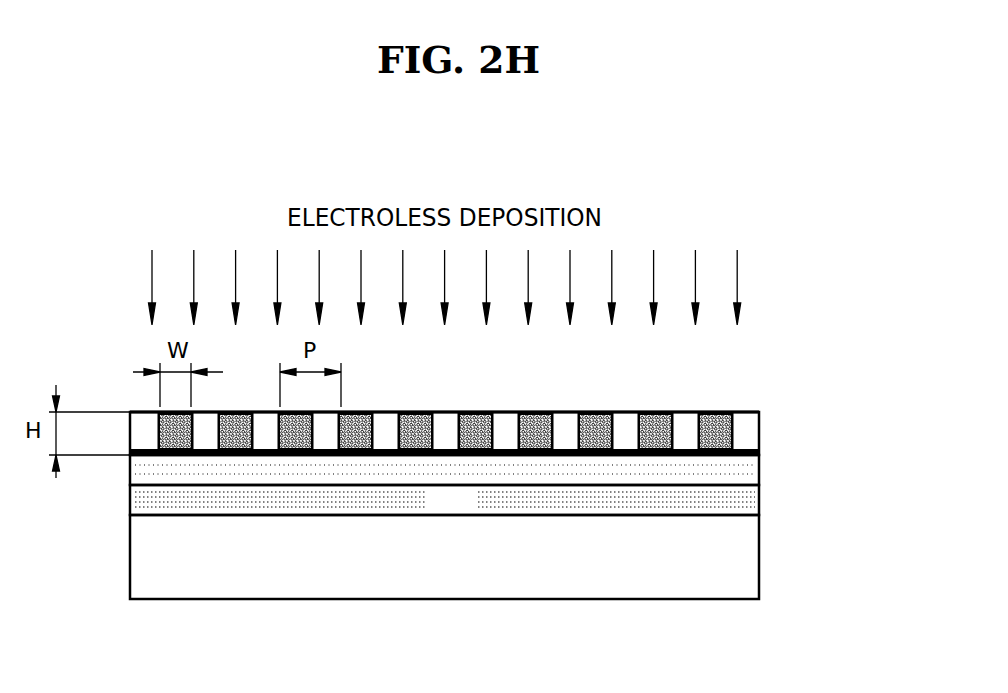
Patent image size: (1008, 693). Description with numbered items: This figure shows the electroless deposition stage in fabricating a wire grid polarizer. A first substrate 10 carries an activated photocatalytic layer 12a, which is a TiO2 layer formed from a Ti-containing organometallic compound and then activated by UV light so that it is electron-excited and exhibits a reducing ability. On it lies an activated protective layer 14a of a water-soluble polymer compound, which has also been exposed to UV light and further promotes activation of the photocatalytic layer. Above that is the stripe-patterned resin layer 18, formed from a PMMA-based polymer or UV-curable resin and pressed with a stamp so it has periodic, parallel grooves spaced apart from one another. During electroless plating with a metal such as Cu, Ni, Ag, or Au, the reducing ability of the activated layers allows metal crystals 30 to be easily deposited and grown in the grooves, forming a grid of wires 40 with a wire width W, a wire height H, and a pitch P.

The first substrate 10 is at (745, 566).
The activated photocatalytic layer 12a is at (746, 505).
The activated protective layer 14a is at (746, 468).
The stripe-patterned resin layer 18 is at (752, 434).
The metal crystals 30 is at (484, 548).
The wire grid 40 is at (595, 414).